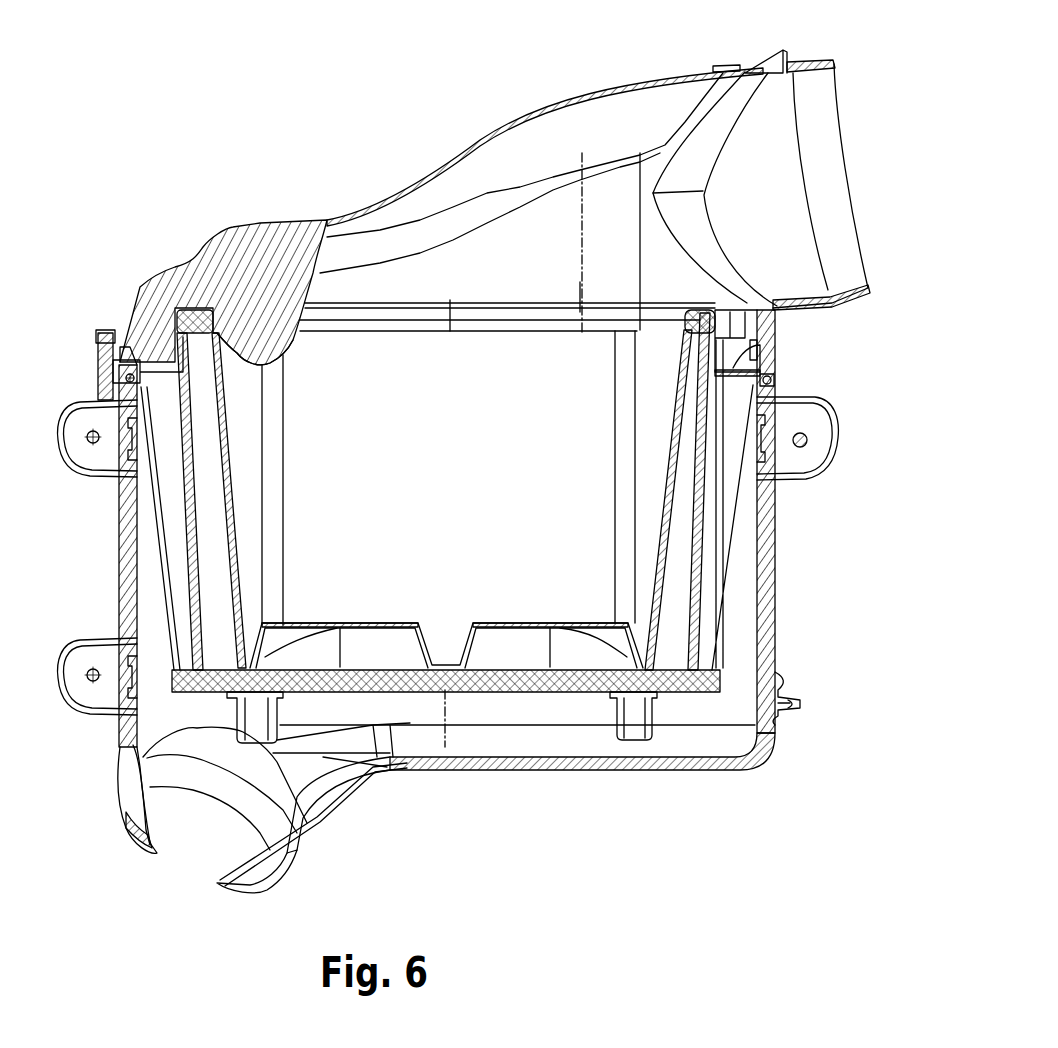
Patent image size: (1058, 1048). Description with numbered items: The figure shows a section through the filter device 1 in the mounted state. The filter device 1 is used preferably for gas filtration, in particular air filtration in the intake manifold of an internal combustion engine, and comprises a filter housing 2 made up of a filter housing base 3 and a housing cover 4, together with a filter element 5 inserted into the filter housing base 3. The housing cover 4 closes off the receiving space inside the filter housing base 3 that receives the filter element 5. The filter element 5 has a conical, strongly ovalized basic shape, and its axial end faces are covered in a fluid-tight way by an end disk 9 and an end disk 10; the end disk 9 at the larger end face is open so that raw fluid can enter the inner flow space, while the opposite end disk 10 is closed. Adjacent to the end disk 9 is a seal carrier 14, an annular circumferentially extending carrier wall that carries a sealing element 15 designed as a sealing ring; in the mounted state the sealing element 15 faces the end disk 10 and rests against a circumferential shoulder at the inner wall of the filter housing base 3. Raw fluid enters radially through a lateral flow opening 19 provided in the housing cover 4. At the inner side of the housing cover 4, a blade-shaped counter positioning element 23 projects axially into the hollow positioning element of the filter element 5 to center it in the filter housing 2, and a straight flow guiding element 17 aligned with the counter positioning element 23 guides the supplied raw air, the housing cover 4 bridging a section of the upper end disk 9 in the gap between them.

The filter device 1 is at (388, 110).
The filter housing 2 is at (777, 580).
The filter housing base 3 is at (762, 633).
The housing cover 4 is at (553, 106).
The filter element 5 is at (372, 300).
The end disk 9 is at (697, 313).
The end disk 10 is at (508, 688).
The seal carrier 14 is at (733, 370).
The sealing element 15 is at (769, 380).
The flow guiding element 17 is at (280, 337).
The lateral flow opening 19 is at (827, 160).
The counter positioning element 23 is at (150, 340).